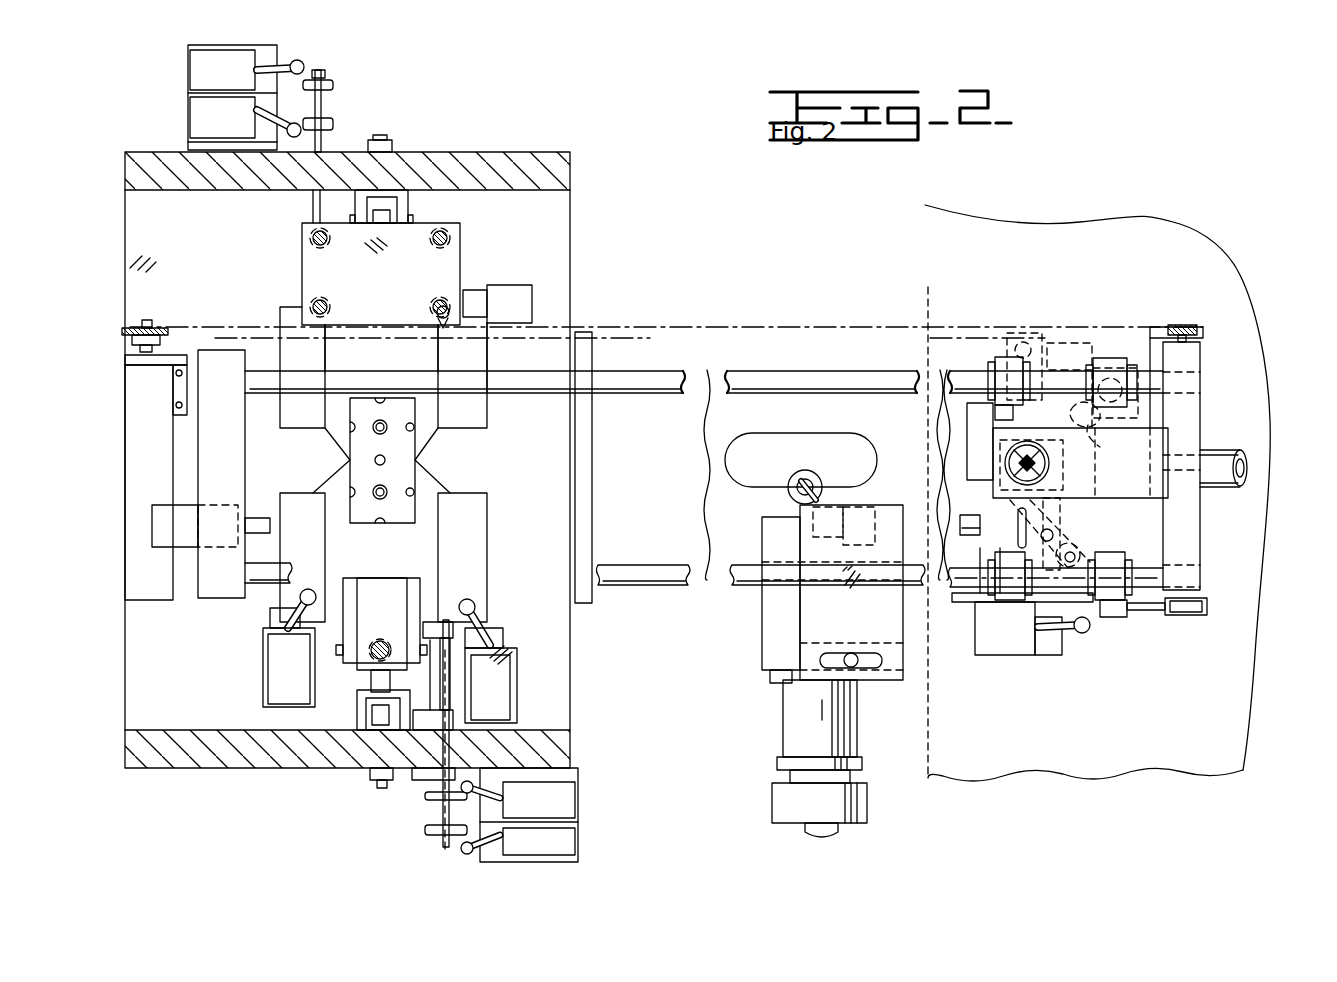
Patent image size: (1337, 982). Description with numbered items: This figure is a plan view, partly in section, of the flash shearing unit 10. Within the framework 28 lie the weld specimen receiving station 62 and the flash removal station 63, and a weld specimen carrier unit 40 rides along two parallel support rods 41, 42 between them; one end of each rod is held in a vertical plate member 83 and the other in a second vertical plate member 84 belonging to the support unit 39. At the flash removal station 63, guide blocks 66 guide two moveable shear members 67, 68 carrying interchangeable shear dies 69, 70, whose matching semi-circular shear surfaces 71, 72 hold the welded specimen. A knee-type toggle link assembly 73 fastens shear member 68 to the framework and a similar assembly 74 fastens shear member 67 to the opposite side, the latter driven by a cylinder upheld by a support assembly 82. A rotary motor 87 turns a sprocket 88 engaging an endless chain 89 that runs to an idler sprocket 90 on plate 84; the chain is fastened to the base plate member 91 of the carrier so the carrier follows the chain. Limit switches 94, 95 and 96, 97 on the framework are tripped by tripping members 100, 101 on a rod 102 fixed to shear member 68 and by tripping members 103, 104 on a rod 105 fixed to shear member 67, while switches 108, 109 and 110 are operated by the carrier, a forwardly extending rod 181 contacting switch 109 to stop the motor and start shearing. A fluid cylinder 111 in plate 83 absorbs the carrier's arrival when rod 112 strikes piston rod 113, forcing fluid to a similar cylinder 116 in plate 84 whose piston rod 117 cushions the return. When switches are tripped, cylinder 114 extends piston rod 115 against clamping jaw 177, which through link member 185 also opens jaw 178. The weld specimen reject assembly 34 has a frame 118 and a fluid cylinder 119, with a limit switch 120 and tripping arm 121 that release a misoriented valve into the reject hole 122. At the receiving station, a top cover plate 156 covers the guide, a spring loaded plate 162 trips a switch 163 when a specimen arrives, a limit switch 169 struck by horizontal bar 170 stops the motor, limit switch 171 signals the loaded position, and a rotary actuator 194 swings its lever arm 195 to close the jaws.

The flash shearing unit 10 is at (636, 288).
The framework 28 is at (544, 150).
The weld specimen reject assembly 34 is at (770, 682).
The support unit 39 is at (585, 603).
The weld specimen carrier unit 40 is at (962, 472).
The support rod 41 is at (270, 563).
The support rod 42 is at (655, 395).
The weld specimen receiving station 62 is at (1178, 420).
The flash removal station 63 is at (466, 448).
The guide blocks 66 is at (292, 307).
The moveable shear member 67 is at (376, 345).
The moveable shear member 68 is at (392, 560).
The interchangeable shear die 69 is at (360, 445).
The interchangeable shear die 70 is at (370, 520).
The semi-circular shear surface 71 is at (383, 398).
The semi-circular shear surface 72 is at (385, 460).
The knee-type toggle link assembly 73 is at (352, 678).
The knee-type toggle link assembly 74 is at (435, 210).
The support assembly 82 is at (346, 298).
The vertical plate member 83 is at (207, 461).
The second vertical plate member 84 is at (1190, 535).
The rotary motor 87 is at (132, 461).
The sprocket 88 is at (150, 320).
The endless chain 89 is at (740, 326).
The idler sprocket 90 is at (1198, 332).
The base plate member 91 is at (994, 345).
The limit switch 94 is at (578, 800).
The limit switch 95 is at (578, 845).
The limit switch 96 is at (195, 103).
The limit switch 97 is at (195, 70).
The tripping member 100 is at (428, 796).
The tripping member 101 is at (430, 830).
The rod 102 is at (485, 805).
The tripping member 103 is at (333, 120).
The tripping member 104 is at (333, 85).
The rod 105 is at (313, 210).
The limit switch 108 is at (530, 300).
The limit switch 109 is at (268, 690).
The limit switch 110 is at (510, 682).
The fluid cylinder 111 is at (163, 540).
The forwardly extending rod 112 is at (965, 518).
The piston rod 113 is at (252, 533).
The cylinder 114 is at (453, 720).
The piston rod 115 is at (466, 672).
The fluid cylinder 116 is at (1243, 465).
The piston rod 117 is at (1190, 462).
The frame 118 is at (885, 680).
The fluid cylinder 119 is at (792, 720).
The limit switch 120 is at (860, 510).
The tripping arm 121 is at (792, 495).
The reject hole 122 is at (810, 440).
The top cover plate 156 is at (1140, 491).
The spring loaded plate 162 is at (1027, 334).
The switch 163 is at (1027, 348).
The limit switch 169 is at (1195, 615).
The horizontally extending bar 170 is at (1148, 612).
The limit switch 171 is at (1022, 655).
The clamping jaw 177 is at (1100, 612).
The clamping jaw 178 is at (994, 475).
The forwardly extending rod 181 is at (965, 603).
The link member 185 is at (1085, 530).
The rotary actuator 194 is at (1108, 368).
The lever arm 195 is at (1095, 440).